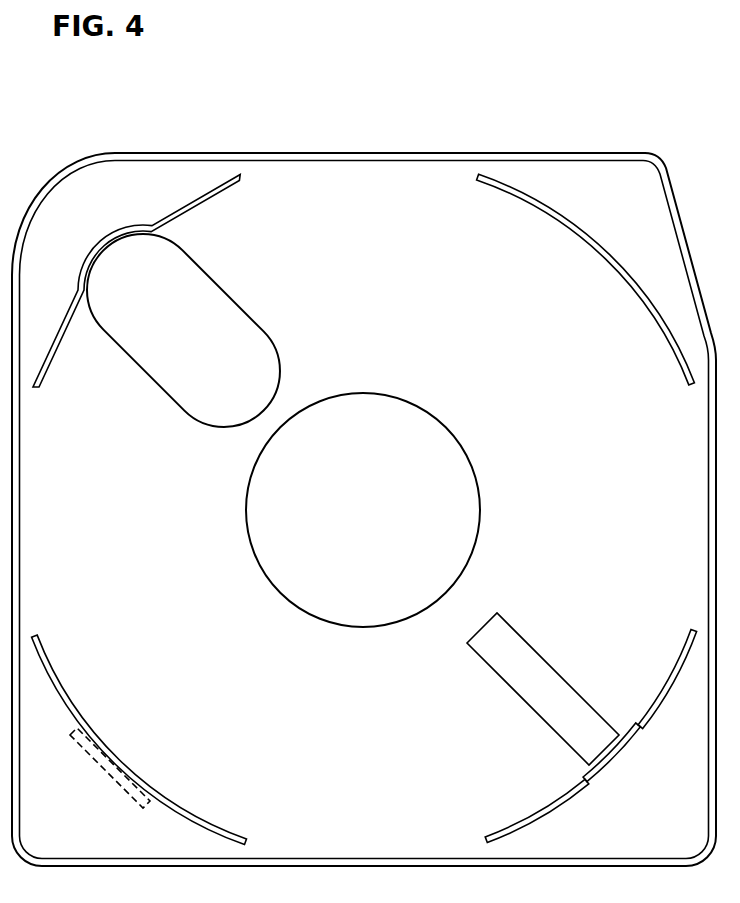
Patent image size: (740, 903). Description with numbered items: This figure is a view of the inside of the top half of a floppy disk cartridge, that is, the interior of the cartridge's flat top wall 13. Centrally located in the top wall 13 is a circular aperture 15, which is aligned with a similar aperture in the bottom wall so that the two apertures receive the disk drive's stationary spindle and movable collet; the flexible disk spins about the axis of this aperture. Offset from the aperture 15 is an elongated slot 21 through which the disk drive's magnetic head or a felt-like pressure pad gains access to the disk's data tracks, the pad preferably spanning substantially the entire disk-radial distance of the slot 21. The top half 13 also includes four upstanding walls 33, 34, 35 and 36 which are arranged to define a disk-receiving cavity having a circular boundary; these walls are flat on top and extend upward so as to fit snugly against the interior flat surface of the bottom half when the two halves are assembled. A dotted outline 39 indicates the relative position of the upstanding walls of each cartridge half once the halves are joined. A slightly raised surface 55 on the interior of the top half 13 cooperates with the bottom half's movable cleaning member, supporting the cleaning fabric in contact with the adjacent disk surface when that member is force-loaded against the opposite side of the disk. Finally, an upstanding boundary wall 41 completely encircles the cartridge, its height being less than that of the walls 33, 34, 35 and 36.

The top wall 13 is at (342, 187).
The upstanding boundary wall 41 is at (197, 157).
The circular aperture 15 is at (437, 427).
The slot 21 is at (236, 312).
The upstanding wall 33 is at (177, 808).
The upstanding wall 34 is at (172, 212).
The upstanding wall 35 is at (603, 253).
The upstanding wall 36 is at (570, 795).
The raised surface 55 is at (532, 663).
The dotted outline 39 is at (120, 779).